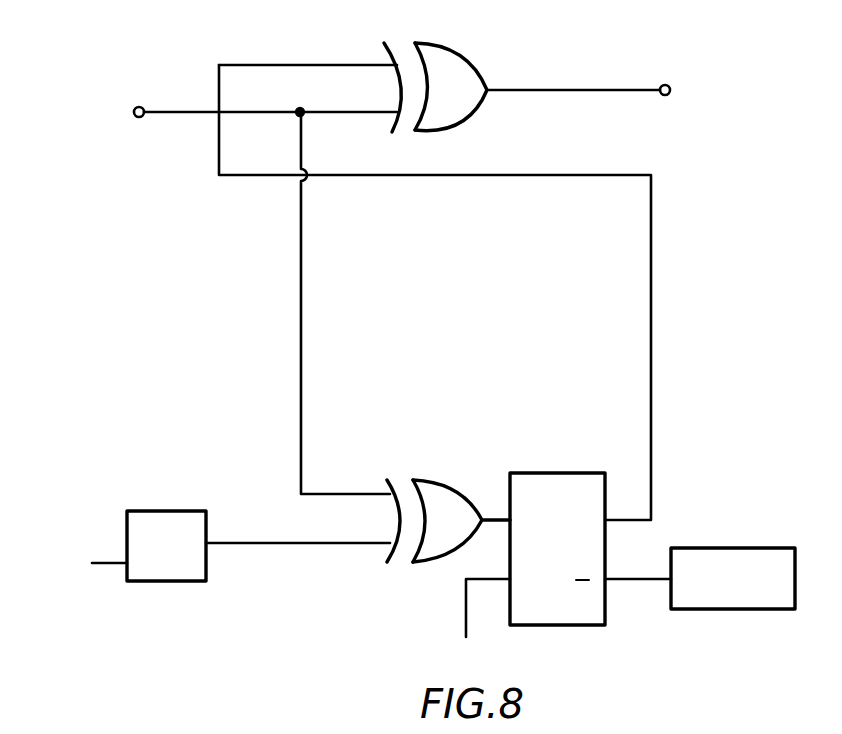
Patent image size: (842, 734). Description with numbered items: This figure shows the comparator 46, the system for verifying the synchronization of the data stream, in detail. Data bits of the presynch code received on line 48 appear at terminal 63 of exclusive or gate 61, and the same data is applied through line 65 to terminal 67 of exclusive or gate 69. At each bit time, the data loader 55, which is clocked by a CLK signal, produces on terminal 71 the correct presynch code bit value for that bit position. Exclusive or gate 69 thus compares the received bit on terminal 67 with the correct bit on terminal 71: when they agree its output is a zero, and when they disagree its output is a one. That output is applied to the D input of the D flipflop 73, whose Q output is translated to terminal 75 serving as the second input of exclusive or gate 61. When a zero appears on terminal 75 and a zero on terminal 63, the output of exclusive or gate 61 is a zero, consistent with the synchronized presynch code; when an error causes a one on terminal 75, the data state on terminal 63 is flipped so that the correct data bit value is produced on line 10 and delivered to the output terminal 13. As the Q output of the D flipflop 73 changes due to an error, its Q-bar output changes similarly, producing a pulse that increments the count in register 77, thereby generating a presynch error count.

The line 10 is at (584, 87).
The terminal 13 is at (671, 92).
The comparator 46 is at (666, 84).
The line 48 is at (172, 115).
The data loader 55 is at (168, 583).
The exclusive or gate 61 is at (478, 62).
The terminal 63 is at (396, 108).
The line 65 is at (303, 290).
The terminal 67 is at (390, 492).
The exclusive or gate 69 is at (454, 486).
The terminal 71 is at (388, 549).
The D flipflop 73 is at (563, 627).
The terminal 75 is at (394, 58).
The register 77 is at (698, 611).